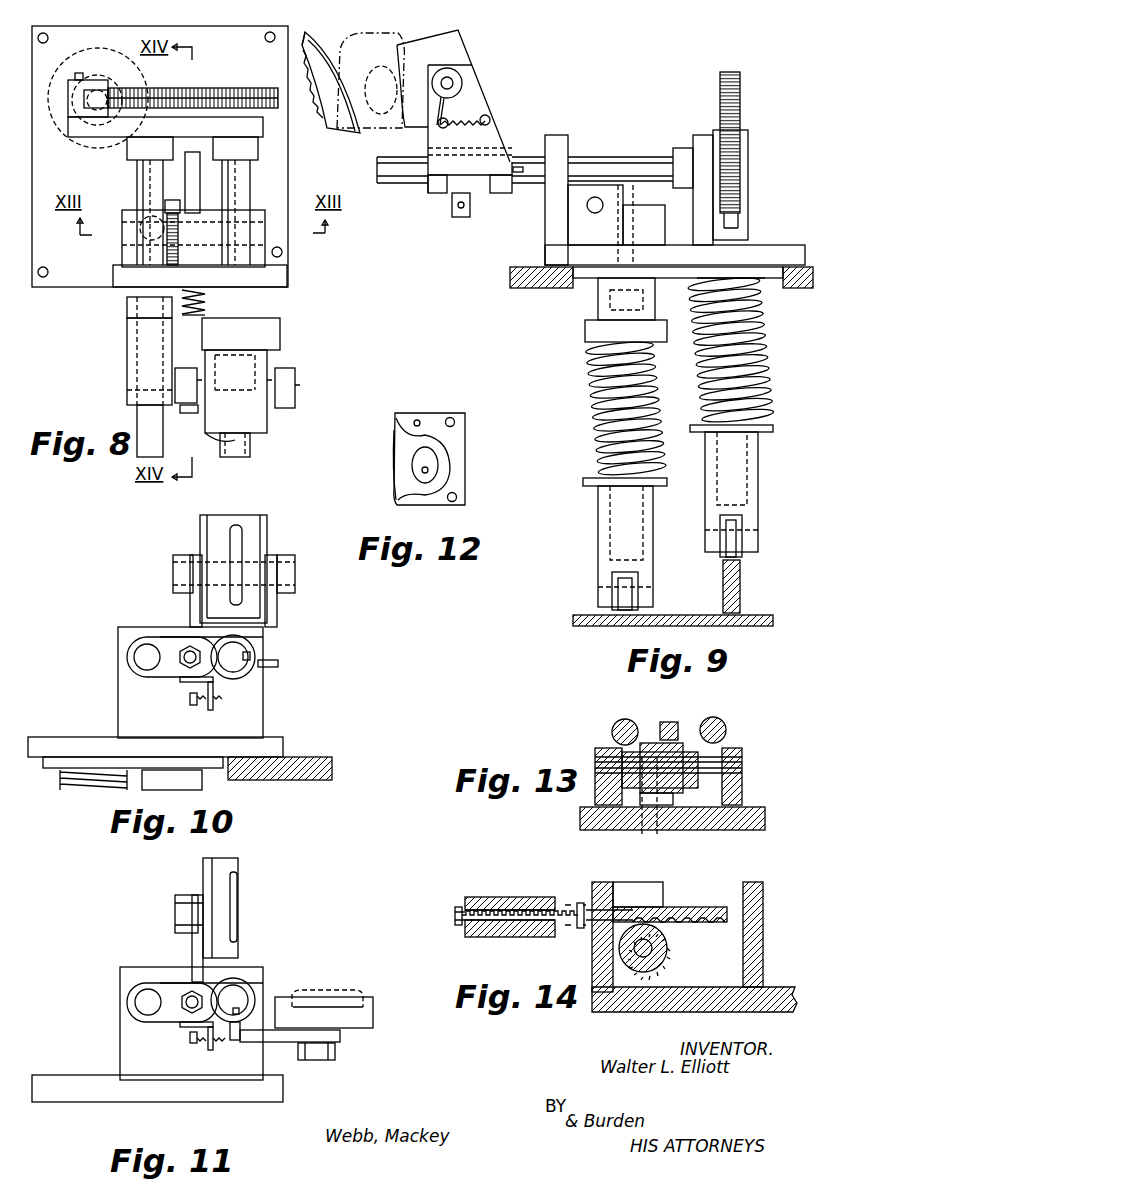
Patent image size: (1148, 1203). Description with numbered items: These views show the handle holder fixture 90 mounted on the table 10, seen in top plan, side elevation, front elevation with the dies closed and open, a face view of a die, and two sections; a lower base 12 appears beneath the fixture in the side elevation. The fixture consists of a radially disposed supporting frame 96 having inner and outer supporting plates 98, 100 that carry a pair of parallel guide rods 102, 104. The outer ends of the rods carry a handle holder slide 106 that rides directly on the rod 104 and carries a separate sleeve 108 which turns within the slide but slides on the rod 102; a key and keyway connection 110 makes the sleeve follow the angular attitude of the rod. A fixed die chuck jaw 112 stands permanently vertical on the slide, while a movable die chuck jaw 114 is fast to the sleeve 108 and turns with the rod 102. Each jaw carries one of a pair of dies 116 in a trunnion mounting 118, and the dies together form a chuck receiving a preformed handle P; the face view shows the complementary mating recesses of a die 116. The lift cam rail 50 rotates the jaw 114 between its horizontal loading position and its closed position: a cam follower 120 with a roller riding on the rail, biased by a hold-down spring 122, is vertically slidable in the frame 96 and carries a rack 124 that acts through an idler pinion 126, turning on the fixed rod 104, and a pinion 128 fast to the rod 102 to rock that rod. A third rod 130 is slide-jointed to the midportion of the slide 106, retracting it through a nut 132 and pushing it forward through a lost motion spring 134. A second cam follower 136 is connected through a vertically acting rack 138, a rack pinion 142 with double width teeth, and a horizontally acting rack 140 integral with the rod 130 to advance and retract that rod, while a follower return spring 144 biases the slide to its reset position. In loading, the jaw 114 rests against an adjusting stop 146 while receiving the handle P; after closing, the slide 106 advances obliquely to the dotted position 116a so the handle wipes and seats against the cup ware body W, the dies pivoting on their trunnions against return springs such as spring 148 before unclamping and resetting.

In FIG. 9, the table 10 is at (512, 278).
In FIG. 10, the table 10 is at (293, 757).
In FIG. 9, the lower base 12 is at (580, 613).
In FIG. 9, the lift cam rail 50 is at (742, 578).
In FIG. 8, the handle holder fixture 90 is at (290, 277).
In FIG. 8, the supporting frame 96 is at (285, 185).
In FIG. 9, the supporting frame 96 is at (550, 260).
In FIG. 13, the supporting frame 96 is at (768, 813).
In FIG. 14, the supporting frame 96 is at (802, 1013).
In FIG. 8, the inner supporting plate 98 is at (258, 127).
In FIG. 9, the inner supporting plate 98 is at (700, 135).
In FIG. 14, the inner supporting plate 98 is at (762, 872).
In FIG. 8, the outer supporting plate 100 is at (283, 268).
In FIG. 9, the outer supporting plate 100 is at (558, 135).
In FIG. 14, the outer supporting plate 100 is at (597, 882).
In FIG. 8, the guide rod 102 is at (247, 310).
In FIG. 9, the guide rod 102 is at (505, 148).
In FIG. 10, the guide rod 102 is at (240, 662).
In FIG. 13, the guide rod 102 is at (722, 725).
In FIG. 8, the guide rod 104 is at (137, 292).
In FIG. 10, the guide rod 104 is at (138, 653).
In FIG. 11, the guide rod 104 is at (140, 1000).
In FIG. 13, the guide rod 104 is at (613, 725).
In FIG. 8, the handle holder slide 106 is at (127, 370).
In FIG. 9, the handle holder slide 106 is at (498, 132).
In FIG. 10, the handle holder slide 106 is at (167, 680).
In FIG. 11, the handle holder slide 106 is at (168, 1022).
In FIG. 14, the handle holder slide 106 is at (513, 897).
In FIG. 10, the sleeve 108 is at (247, 645).
In FIG. 11, the sleeve 108 is at (253, 983).
In FIG. 9, the key and keyway connection 110 is at (393, 170).
In FIG. 10, the key and keyway connection 110 is at (250, 657).
In FIG. 11, the key and keyway connection 110 is at (252, 1040).
In FIG. 10, the fixed die chuck jaw 112 is at (192, 602).
In FIG. 11, the fixed die chuck jaw 112 is at (195, 945).
In FIG. 9, the movable die chuck jaw 114 is at (430, 138).
In FIG. 10, the movable die chuck jaw 114 is at (273, 602).
In FIG. 11, the movable die chuck jaw 114 is at (285, 1042).
In FIG. 8, the die 116 is at (220, 435).
In FIG. 9, the die 116 is at (442, 32).
In FIG. 12, the die 116 is at (466, 424).
In FIG. 10, the die 116 is at (215, 515).
In FIG. 11, the die 116 is at (230, 865).
In FIG. 9, the dotted line position of dies 116a is at (362, 43).
In FIG. 8, the trunnion mounting 118 is at (175, 387).
In FIG. 9, the trunnion mounting 118 is at (449, 81).
In FIG. 10, the trunnion mounting 118 is at (177, 565).
In FIG. 11, the trunnion mounting 118 is at (177, 908).
In FIG. 8, the cam follower 120 is at (107, 80).
In FIG. 9, the cam follower 120 is at (767, 337).
In FIG. 9, the hold-down spring 122 is at (765, 308).
In FIG. 8, the rack 124 is at (97, 100).
In FIG. 9, the rack 124 is at (743, 97).
In FIG. 8, the idler pinion 126 is at (180, 88).
In FIG. 8, the pinion 128 is at (258, 88).
In FIG. 8, the third rod 130 is at (205, 297).
In FIG. 14, the third rod 130 is at (565, 900).
In FIG. 8, the nut 132 is at (170, 413).
In FIG. 14, the nut 132 is at (460, 904).
In FIG. 8, the lost motion spring 134 is at (180, 322).
In FIG. 14, the lost motion spring 134 is at (565, 927).
In FIG. 8, the cam follower 136 is at (122, 203).
In FIG. 9, the cam follower 136 is at (610, 408).
In FIG. 8, the vertically acting rack 138 is at (167, 187).
In FIG. 13, the vertically acting rack 138 is at (648, 837).
In FIG. 8, the horizontally acting rack 140 is at (197, 173).
In FIG. 13, the horizontally acting rack 140 is at (673, 722).
In FIG. 14, the horizontally acting rack 140 is at (703, 907).
In FIG. 13, the rack pinion 142 is at (653, 740).
In FIG. 14, the rack pinion 142 is at (670, 948).
In FIG. 9, the follower return spring 144 is at (595, 350).
In FIG. 9, the adjusting stop 146 is at (463, 217).
In FIG. 10, the adjusting stop 146 is at (213, 710).
In FIG. 11, the adjusting stop 146 is at (210, 1052).
In FIG. 9, the return spring 148 is at (477, 110).
In FIG. 9, the preformed handle P is at (378, 60).
In FIG. 12, the preformed handle P is at (446, 461).
In FIG. 11, the preformed handle P is at (325, 992).
In FIG. 9, the cup ware body W is at (308, 30).